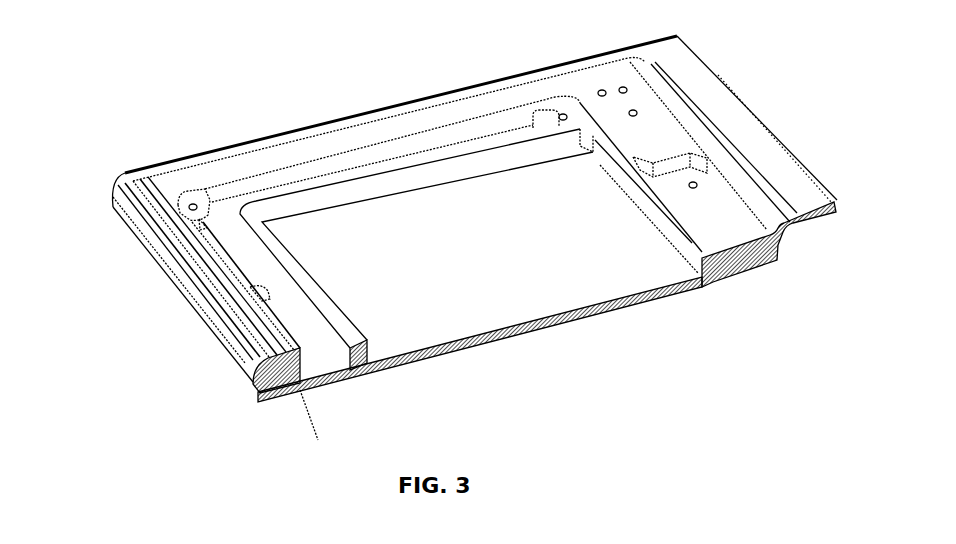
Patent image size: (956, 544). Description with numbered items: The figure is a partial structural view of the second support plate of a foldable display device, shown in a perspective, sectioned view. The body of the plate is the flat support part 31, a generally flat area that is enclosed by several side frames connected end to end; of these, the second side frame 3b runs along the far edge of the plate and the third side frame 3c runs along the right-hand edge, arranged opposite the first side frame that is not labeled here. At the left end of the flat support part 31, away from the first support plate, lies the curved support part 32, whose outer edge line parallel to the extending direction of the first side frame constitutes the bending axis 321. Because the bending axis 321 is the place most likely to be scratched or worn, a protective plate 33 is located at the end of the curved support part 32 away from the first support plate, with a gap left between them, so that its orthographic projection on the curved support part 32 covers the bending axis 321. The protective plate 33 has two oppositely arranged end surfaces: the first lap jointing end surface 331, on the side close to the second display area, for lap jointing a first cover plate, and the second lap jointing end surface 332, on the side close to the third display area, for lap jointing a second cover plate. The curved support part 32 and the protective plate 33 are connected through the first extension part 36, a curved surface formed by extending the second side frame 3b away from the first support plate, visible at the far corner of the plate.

The second side frame 3b is at (407, 102).
The third side frame 3c is at (743, 142).
The flat support part 31 is at (380, 233).
The curved support part 32 is at (300, 386).
The bending axis 321 is at (314, 429).
The protective plate 33 is at (220, 330).
The first lap jointing end surface 331 is at (213, 282).
The second lap jointing end surface 332 is at (236, 362).
The first extension part 36 is at (116, 189).